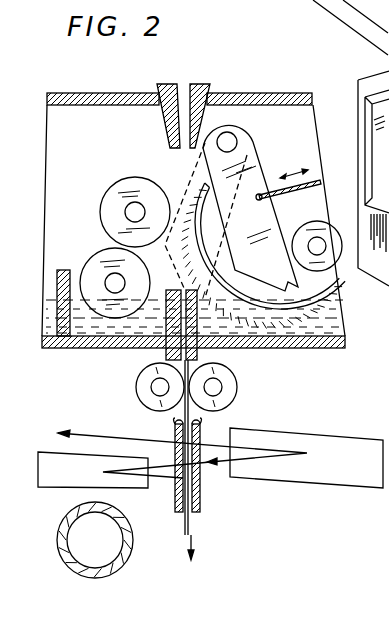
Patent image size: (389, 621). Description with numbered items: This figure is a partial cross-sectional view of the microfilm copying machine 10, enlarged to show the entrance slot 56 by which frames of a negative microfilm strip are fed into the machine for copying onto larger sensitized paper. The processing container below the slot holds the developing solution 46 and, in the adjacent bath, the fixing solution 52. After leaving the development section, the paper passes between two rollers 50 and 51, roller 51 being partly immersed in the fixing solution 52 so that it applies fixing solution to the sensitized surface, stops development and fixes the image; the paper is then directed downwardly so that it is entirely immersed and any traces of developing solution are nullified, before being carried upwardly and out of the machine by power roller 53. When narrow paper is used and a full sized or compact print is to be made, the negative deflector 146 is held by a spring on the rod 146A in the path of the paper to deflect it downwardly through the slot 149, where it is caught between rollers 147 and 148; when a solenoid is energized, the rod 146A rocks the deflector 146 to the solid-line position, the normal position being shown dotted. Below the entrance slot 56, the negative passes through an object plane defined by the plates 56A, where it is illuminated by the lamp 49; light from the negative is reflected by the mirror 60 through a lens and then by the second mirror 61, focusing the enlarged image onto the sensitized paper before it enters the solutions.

The processor housing 10 is at (278, 93).
The entrance slot 56 is at (162, 84).
The roller 50 is at (107, 197).
The roller 51 is at (91, 266).
The negative deflector 146 is at (240, 220).
The rod 146A is at (268, 180).
The power roller 53 is at (313, 222).
The fixing solution 52 is at (313, 332).
The developing solution 46 is at (44, 346).
The slot 149 is at (182, 338).
The roller 147 is at (140, 399).
The roller 148 is at (232, 398).
The plates 56A is at (203, 500).
The mirror 60 is at (60, 477).
The second mirror 61 is at (293, 470).
The lamp 49 is at (106, 575).